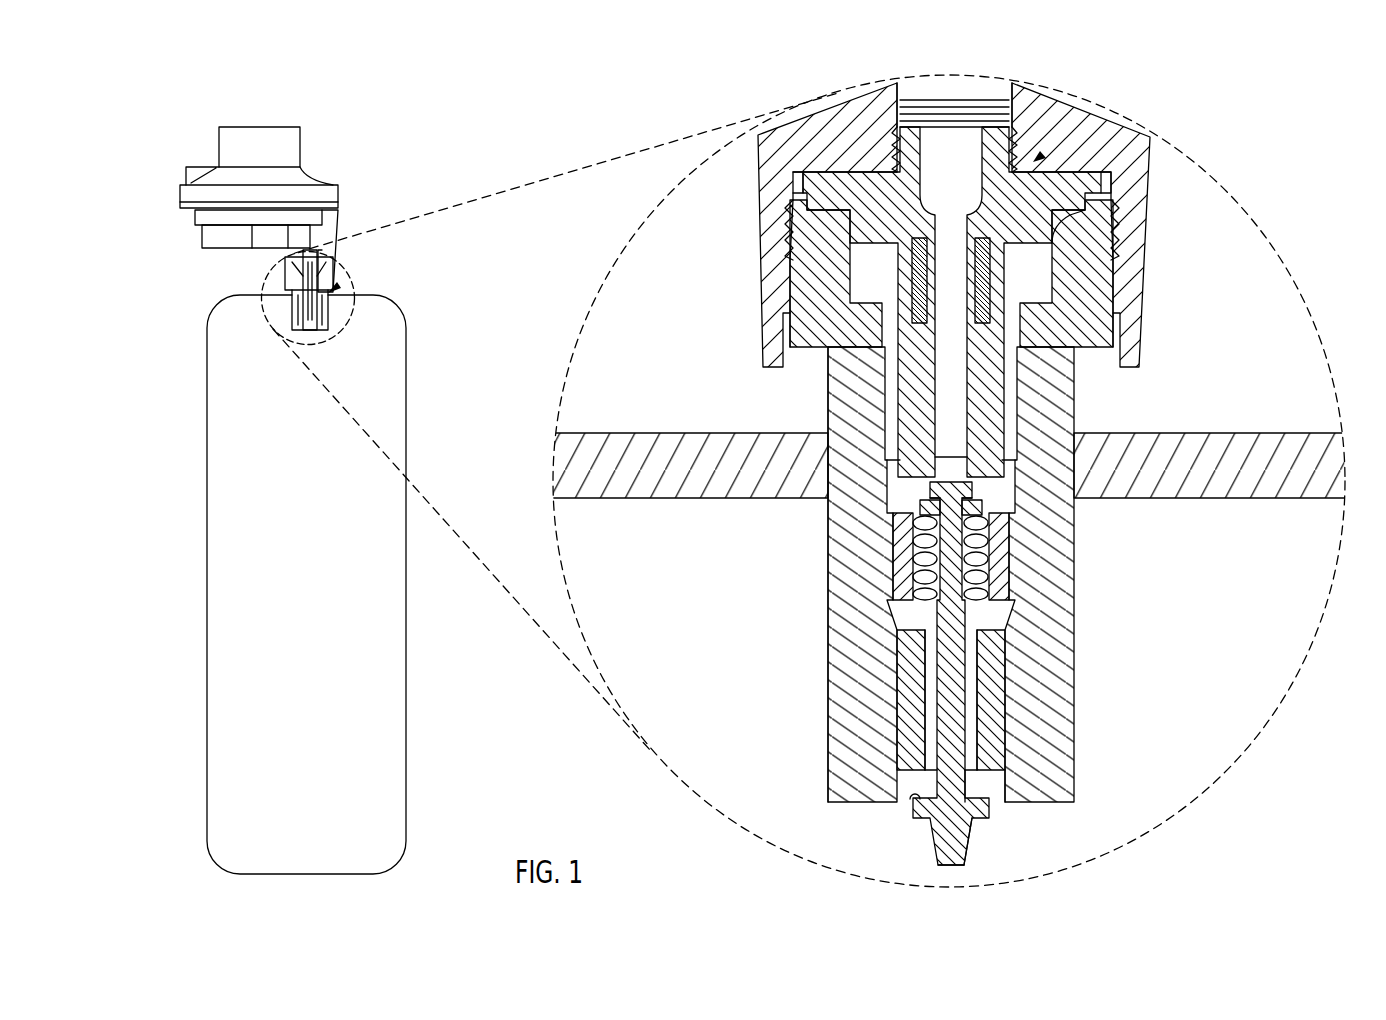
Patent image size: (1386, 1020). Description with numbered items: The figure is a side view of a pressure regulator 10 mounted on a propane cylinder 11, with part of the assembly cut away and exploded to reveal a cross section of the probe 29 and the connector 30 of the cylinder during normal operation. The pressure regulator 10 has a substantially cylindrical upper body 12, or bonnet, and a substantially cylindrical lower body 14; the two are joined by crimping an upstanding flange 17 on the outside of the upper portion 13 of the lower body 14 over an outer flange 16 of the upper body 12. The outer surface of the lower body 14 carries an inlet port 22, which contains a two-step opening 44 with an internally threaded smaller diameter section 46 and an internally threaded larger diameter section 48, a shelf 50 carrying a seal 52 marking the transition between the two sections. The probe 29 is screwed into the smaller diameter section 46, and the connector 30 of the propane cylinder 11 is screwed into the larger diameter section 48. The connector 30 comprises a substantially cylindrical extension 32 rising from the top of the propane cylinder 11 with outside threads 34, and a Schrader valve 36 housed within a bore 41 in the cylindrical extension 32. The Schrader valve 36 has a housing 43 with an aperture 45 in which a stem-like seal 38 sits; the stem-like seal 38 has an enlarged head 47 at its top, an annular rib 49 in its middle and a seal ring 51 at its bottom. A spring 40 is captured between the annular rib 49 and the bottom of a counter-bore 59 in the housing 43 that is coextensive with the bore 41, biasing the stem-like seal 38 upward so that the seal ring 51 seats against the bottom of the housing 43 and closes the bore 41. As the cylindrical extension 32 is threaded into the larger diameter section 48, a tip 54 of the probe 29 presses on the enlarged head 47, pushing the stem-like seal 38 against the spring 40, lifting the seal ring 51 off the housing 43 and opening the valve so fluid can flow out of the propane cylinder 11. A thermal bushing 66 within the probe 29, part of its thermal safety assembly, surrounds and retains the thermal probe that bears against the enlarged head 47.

The pressure regulator 10 is at (250, 188).
The propane cylinder 11 is at (203, 428).
The upper body 12 is at (306, 143).
The upper portion 13 is at (176, 195).
The lower body 14 is at (195, 240).
The outer flange 16 is at (325, 181).
The upstanding flange 17 is at (340, 196).
The inlet port 22 is at (342, 268).
The probe 29 is at (332, 298).
The connector 30 is at (966, 574).
The cylindrical extension 32 is at (826, 401).
The outside threads 34 is at (1114, 252).
The "Schrader" valve 36 is at (978, 828).
The stem-like seal 38 is at (928, 852).
The spring 40 is at (992, 572).
The bore 41 is at (993, 795).
The housing 43 is at (1002, 745).
The two-step opening 44 is at (1118, 184).
The aperture 45 is at (972, 703).
The smaller diameter section 46 is at (898, 118).
The enlarged head 47 is at (955, 635).
The larger diameter section 48 is at (788, 252).
The annular rib 49 is at (926, 497).
The shelf 50 is at (800, 170).
The seal ring 51 is at (915, 792).
The seal 52 is at (792, 172).
The tip 54 is at (995, 450).
The counter-bore 59 is at (912, 580).
The thermal bushing 66 is at (796, 282).